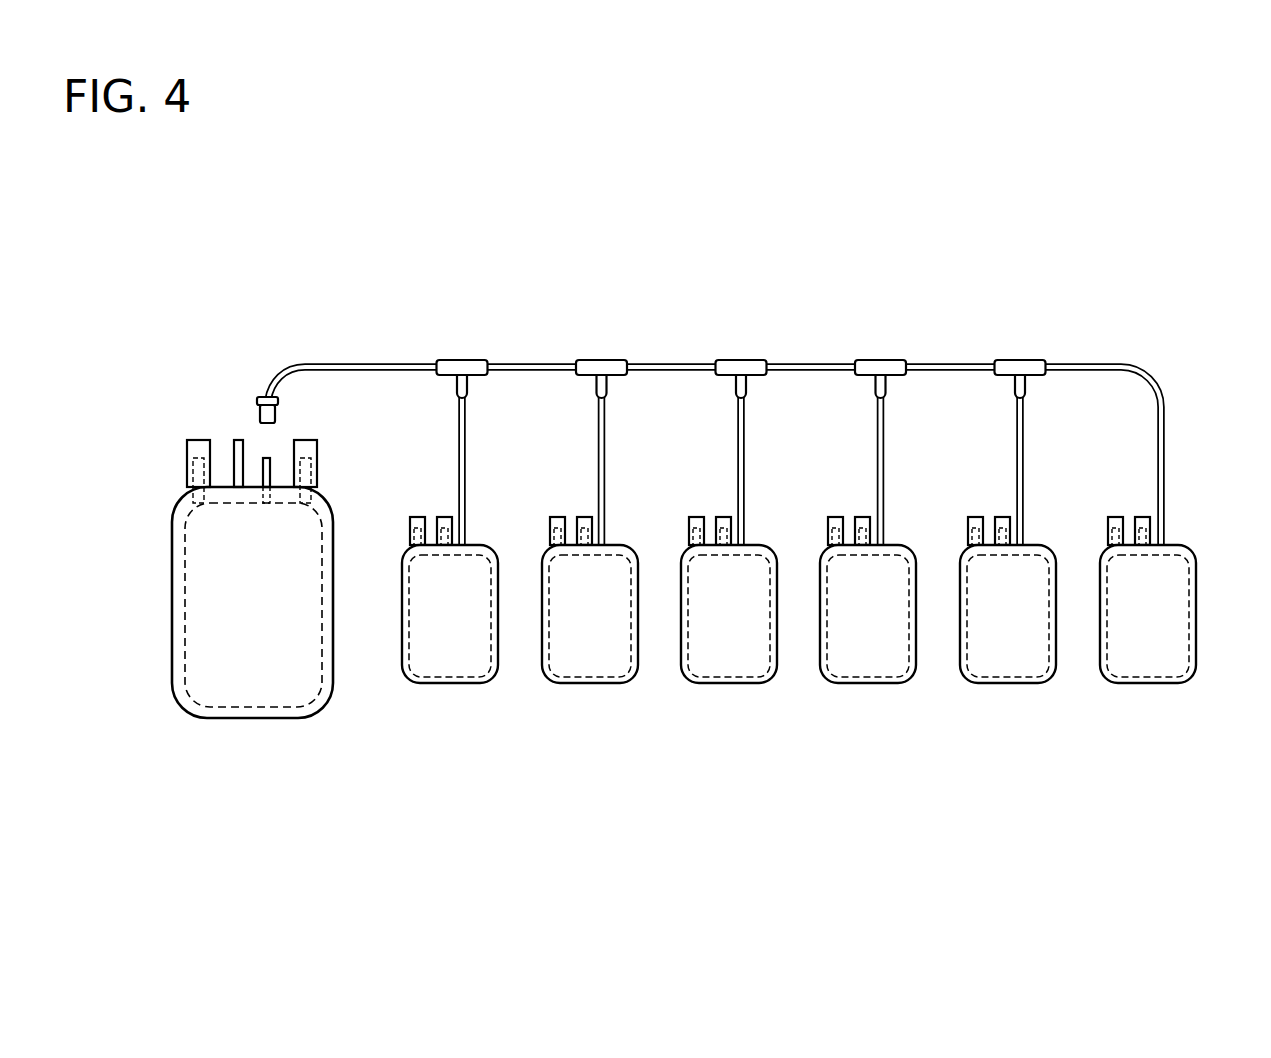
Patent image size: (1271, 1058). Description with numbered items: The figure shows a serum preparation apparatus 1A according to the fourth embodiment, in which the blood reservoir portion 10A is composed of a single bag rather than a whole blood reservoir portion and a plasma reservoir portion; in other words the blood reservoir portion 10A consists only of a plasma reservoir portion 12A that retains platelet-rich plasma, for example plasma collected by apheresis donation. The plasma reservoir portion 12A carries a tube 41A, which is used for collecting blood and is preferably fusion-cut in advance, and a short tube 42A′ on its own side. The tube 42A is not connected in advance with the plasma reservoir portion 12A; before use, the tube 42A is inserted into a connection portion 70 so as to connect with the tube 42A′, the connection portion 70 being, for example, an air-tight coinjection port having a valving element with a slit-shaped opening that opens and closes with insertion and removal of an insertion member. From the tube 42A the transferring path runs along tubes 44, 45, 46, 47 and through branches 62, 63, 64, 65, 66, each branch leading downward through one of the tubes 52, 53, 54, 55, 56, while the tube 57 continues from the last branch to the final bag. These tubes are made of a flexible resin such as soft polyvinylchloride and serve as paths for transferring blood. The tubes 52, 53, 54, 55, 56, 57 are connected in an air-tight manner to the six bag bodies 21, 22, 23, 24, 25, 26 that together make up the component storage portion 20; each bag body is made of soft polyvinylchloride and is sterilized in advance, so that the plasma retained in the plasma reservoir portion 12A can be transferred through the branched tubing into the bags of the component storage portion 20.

The serum preparation apparatus 1A is at (678, 283).
The blood reservoir portion 10A is at (327, 569).
The plasma reservoir portion 12A is at (327, 569).
The tube 41A is at (238, 437).
The tube 42A is at (370, 362).
The tube 42A′ is at (268, 473).
The tube 44 is at (530, 363).
The tube 45 is at (663, 363).
The tube 46 is at (800, 363).
The tube 47 is at (940, 363).
The tube 52 is at (466, 440).
The tube 53 is at (606, 440).
The tube 54 is at (745, 440).
The tube 55 is at (885, 440).
The tube 56 is at (1024, 440).
The tube 57 is at (1165, 445).
The branch 62 is at (460, 360).
The branch 63 is at (600, 360).
The branch 64 is at (740, 360).
The branch 65 is at (880, 360).
The branch 66 is at (1018, 360).
The connection portion 70 is at (265, 396).
The component storage portion 20 is at (799, 680).
The bag body 21 is at (462, 683).
The bag body 22 is at (582, 683).
The bag body 23 is at (722, 683).
The bag body 24 is at (872, 683).
The bag body 25 is at (1005, 683).
The bag body 26 is at (1083, 646).